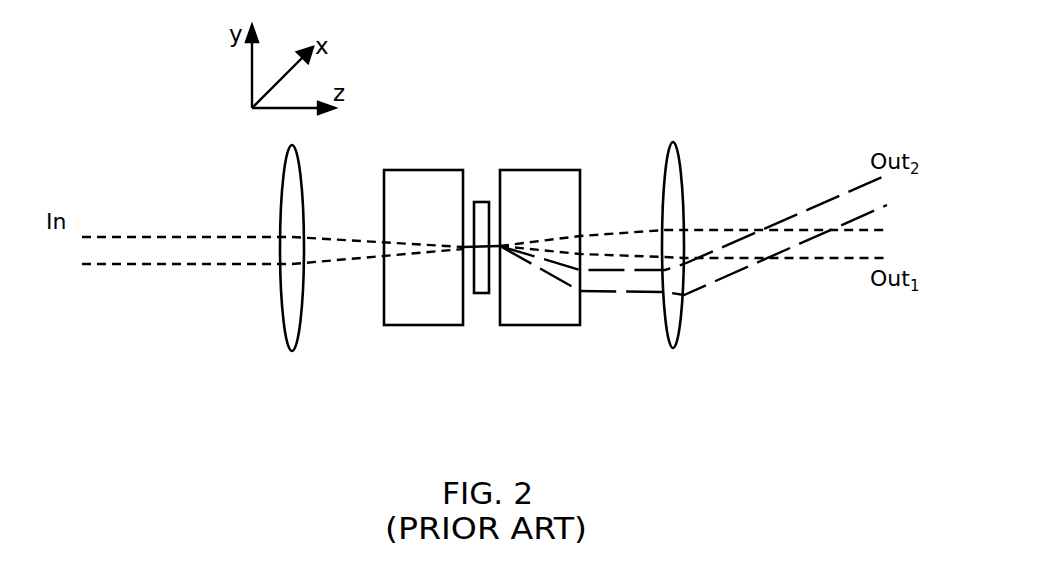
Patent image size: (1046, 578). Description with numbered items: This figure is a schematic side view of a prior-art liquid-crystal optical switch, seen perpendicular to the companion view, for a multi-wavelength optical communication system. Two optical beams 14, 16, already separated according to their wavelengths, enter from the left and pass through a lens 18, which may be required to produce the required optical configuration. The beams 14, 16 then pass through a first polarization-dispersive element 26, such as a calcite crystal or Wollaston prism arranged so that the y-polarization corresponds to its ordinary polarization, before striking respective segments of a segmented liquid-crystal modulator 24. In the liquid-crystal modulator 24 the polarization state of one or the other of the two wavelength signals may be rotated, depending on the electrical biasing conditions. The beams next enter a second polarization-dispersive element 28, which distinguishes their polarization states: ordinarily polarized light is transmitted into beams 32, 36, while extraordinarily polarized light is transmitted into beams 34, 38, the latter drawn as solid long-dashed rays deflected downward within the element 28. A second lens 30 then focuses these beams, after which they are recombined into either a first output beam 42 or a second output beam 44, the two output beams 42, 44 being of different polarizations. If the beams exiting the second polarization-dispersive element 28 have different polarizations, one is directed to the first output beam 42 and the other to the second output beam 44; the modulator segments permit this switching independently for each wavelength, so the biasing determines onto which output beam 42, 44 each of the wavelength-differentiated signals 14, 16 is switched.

The optical beam 14 is at (272, 214).
The optical beam 16 is at (178, 247).
The lens 18 is at (296, 328).
The segmented liquid-crystal modulator 24 is at (485, 294).
The first polarization-dispersive element 26 is at (425, 190).
The second polarization-dispersive element 28 is at (558, 190).
The second lens 30 is at (673, 170).
The ordinarily polarized beam 32 is at (694, 207).
The ordinarily polarized beam 36 is at (648, 240).
The extraordinarily polarized beam 34 is at (693, 274).
The extraordinarily polarized beam 38 is at (603, 284).
The first output beam 42 is at (838, 246).
The second output beam 44 is at (848, 208).